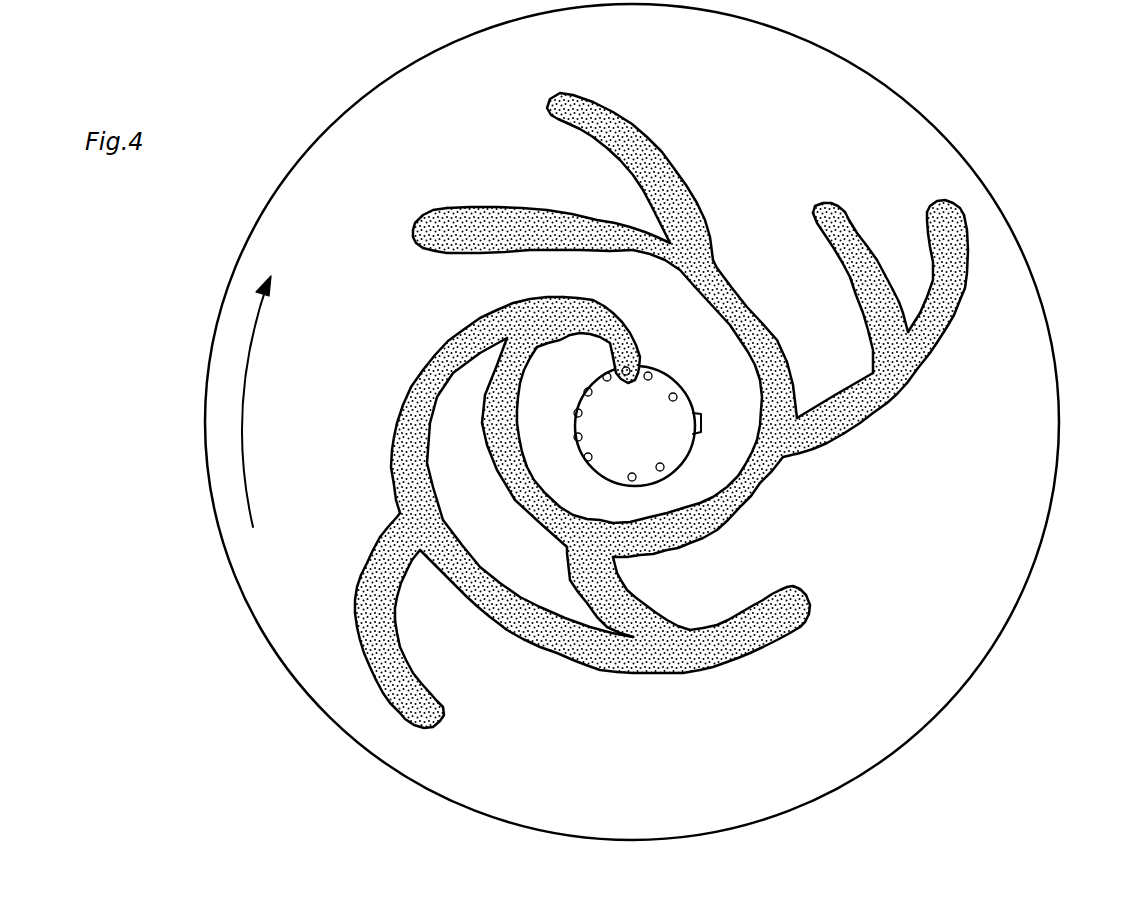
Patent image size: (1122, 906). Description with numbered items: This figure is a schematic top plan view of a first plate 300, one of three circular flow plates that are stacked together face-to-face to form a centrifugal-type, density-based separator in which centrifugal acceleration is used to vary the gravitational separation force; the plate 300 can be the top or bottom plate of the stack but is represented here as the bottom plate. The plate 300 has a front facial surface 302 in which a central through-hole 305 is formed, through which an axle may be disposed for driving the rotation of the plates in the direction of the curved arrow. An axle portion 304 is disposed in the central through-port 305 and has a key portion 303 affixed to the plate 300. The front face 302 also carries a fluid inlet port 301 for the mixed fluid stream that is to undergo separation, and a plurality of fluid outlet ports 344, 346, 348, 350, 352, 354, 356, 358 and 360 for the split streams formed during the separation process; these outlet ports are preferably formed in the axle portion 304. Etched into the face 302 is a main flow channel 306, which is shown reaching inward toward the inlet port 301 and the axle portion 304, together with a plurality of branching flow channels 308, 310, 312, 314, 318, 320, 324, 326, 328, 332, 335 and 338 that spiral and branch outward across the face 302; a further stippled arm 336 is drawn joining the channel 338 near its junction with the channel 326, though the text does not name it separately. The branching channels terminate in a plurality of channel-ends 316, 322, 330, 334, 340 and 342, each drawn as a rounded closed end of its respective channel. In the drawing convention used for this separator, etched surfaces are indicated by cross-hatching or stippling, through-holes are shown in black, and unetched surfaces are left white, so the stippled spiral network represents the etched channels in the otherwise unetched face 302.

The first plate 300 is at (944, 70).
The fluid inlet port 301 is at (634, 366).
The front facial surface 302 is at (995, 504).
The key portion 303 is at (701, 425).
The axle portion 304 is at (680, 381).
The central through-hole 305 is at (722, 453).
The main flow channel 306 is at (618, 320).
The branching flow channel 308 is at (414, 380).
The branching flow channel 310 is at (490, 449).
The branching flow channel 312 is at (364, 590).
The branching flow channel 314 is at (502, 583).
The channel-end 316 is at (440, 712).
The branching flow channel 318 is at (632, 597).
The branching flow channel 320 is at (750, 637).
The channel-end 322 is at (812, 602).
The branching flow channel 324 is at (741, 514).
The branching flow channel 326 is at (775, 339).
The branching flow channel 328 is at (875, 410).
The channel-end 330 is at (818, 210).
The branching flow channel 332 is at (960, 300).
The channel-end 334 is at (948, 207).
The branching flow channel 335 is at (850, 281).
The arm 336 is at (576, 210).
The branching flow channel 338 is at (675, 158).
The channel-end 340 is at (412, 229).
The channel-end 342 is at (550, 104).
The fluid outlet port 344 is at (662, 472).
The fluid outlet port 346 is at (629, 480).
The fluid outlet port 348 is at (585, 455).
The fluid outlet port 350 is at (576, 434).
The fluid outlet port 352 is at (576, 411).
The fluid outlet port 354 is at (586, 389).
The fluid outlet port 356 is at (607, 372).
The fluid outlet port 358 is at (662, 371).
The fluid outlet port 360 is at (680, 396).